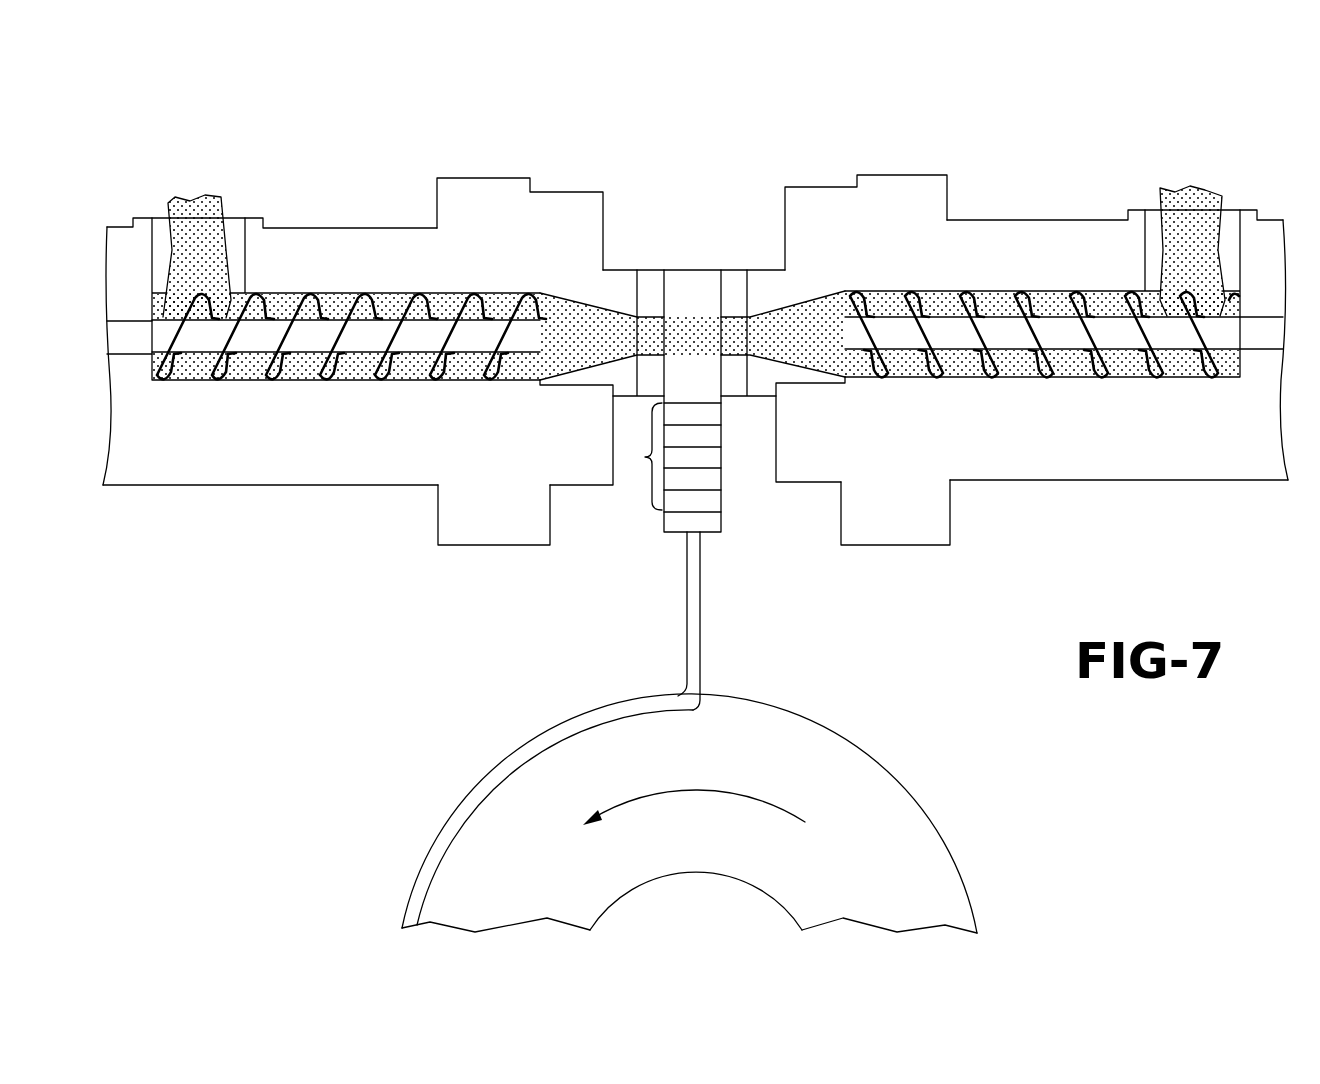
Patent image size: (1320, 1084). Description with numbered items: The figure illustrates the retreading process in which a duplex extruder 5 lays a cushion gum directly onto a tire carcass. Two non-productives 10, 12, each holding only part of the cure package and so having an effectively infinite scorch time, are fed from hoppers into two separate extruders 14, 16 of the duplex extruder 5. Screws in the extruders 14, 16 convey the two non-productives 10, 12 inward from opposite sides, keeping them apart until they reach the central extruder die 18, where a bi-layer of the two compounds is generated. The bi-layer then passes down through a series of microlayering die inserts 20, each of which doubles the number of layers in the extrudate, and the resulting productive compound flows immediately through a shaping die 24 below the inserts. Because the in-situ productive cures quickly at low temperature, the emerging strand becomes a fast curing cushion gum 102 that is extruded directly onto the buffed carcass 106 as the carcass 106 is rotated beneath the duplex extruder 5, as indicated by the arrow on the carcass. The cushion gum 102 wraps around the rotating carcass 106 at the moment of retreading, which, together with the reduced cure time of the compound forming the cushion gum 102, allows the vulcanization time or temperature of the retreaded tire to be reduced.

The duplex extruder 5 is at (288, 562).
The non-productive 10 is at (198, 217).
The non-productive 12 is at (1190, 210).
The extruder 14 is at (483, 178).
The extruder 16 is at (898, 186).
The extruder die 18 is at (697, 268).
The microlayering die inserts 20 is at (643, 457).
The shaping die 24 is at (721, 523).
The cushion gum 102 is at (482, 782).
The buffed carcass 106 is at (788, 743).